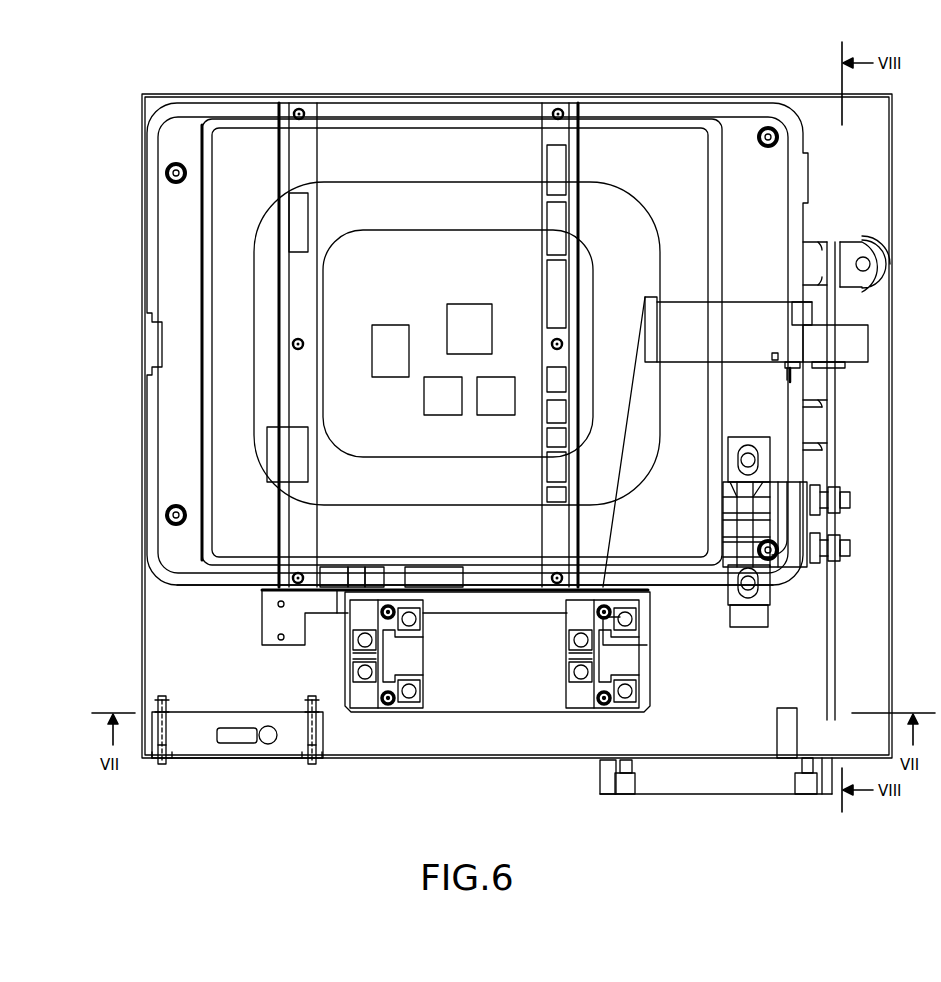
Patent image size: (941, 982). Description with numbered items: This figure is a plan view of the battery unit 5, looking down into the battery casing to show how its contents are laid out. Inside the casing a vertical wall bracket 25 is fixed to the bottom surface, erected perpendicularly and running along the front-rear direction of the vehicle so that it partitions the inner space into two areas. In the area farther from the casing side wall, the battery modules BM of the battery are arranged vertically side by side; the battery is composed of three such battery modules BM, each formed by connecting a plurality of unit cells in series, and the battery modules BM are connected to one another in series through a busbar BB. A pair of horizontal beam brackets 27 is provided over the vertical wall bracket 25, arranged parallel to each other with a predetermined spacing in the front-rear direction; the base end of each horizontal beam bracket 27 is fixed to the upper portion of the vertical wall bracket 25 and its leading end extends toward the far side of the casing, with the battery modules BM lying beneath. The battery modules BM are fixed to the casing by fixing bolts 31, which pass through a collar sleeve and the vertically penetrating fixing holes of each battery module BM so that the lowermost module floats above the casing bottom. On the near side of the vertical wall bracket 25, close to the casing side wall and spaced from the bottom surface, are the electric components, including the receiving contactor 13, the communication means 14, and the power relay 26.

The battery unit 5 is at (140, 325).
The receiving contactor 13 is at (662, 780).
The communication means 14 is at (198, 733).
The vertical wall bracket 25 is at (268, 597).
The power relay 26 is at (612, 655).
The horizontal beam bracket 27 is at (573, 152).
The fixing bolt 31 is at (165, 170).
The busbar BB is at (832, 257).
The battery module BM is at (163, 582).